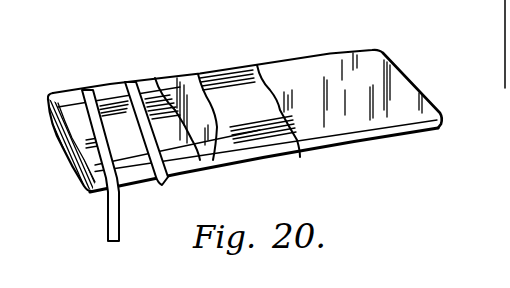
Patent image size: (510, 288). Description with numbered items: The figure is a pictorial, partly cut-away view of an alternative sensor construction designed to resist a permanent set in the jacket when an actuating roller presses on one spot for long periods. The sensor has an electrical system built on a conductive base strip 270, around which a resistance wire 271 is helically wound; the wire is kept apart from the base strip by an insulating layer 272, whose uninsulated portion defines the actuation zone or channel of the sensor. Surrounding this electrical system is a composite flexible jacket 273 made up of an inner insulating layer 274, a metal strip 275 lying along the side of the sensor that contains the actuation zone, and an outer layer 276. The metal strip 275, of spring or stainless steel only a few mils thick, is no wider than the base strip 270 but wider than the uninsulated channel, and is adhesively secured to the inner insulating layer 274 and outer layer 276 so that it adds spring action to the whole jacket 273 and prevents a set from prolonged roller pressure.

The conductive base strip 270 is at (84, 133).
The resistance wire 271 is at (117, 202).
The insulating layer 272 is at (70, 106).
The composite flexible jacket 273 is at (350, 60).
The inner insulating layer 274 is at (172, 93).
The metal strip 275 is at (250, 122).
The outer layer 276 is at (357, 120).